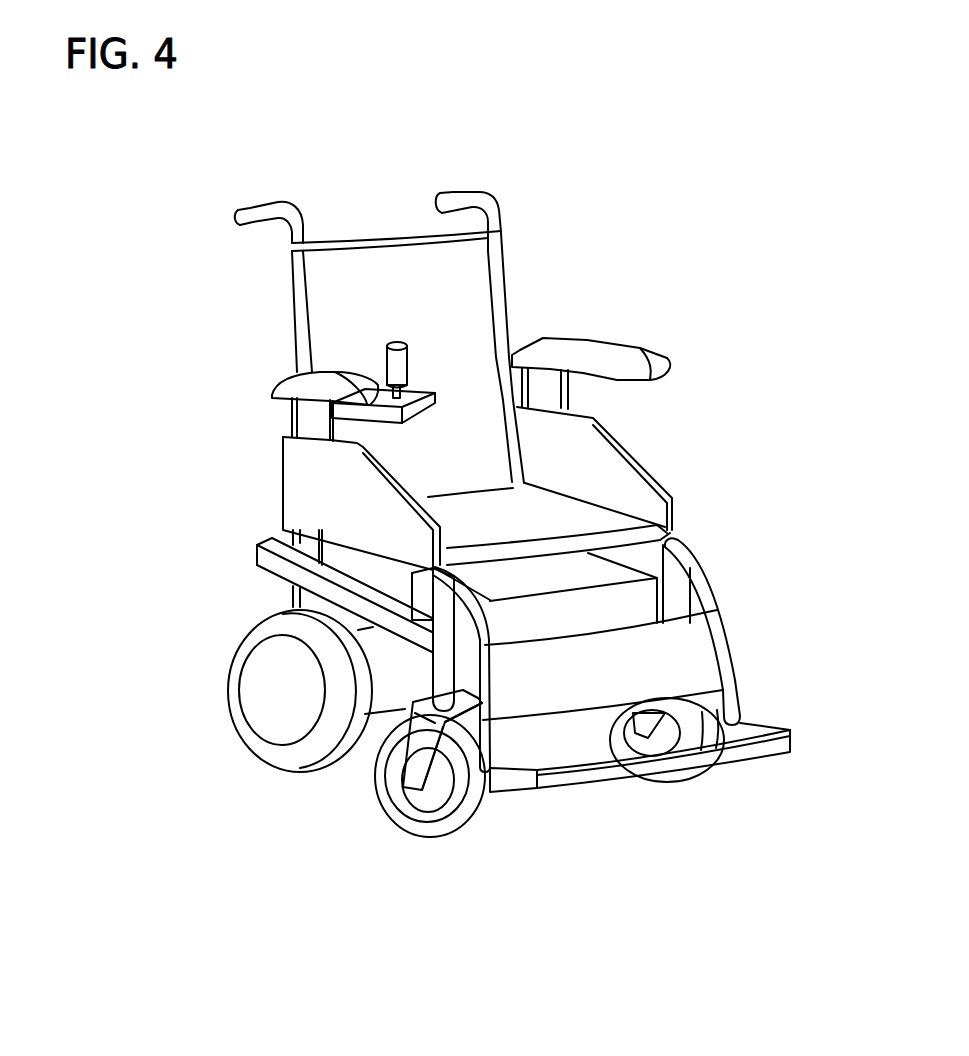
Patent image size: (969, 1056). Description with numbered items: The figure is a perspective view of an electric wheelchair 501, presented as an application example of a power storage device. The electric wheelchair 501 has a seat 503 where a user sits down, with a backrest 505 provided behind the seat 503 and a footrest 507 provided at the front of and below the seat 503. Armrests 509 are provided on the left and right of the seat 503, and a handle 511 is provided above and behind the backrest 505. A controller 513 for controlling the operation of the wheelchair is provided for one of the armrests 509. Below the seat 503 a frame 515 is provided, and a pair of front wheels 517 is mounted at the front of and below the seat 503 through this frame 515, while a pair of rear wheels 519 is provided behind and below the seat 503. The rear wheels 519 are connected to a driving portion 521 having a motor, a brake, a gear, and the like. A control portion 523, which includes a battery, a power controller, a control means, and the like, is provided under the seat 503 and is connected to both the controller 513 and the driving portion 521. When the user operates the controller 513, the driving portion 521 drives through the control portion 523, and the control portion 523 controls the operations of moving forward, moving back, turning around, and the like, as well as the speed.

The electric wheelchair 501 is at (212, 143).
The seat 503 is at (587, 515).
The backrest 505 is at (452, 342).
The footrest 507 is at (600, 762).
The armrests 509 is at (628, 360).
The handle 511 is at (470, 197).
The controller 513 is at (397, 367).
The frame 515 is at (673, 595).
The front wheels 517 is at (428, 803).
The rear wheels 519 is at (278, 714).
The driving portion 521 is at (397, 688).
The control portion 523 is at (640, 613).